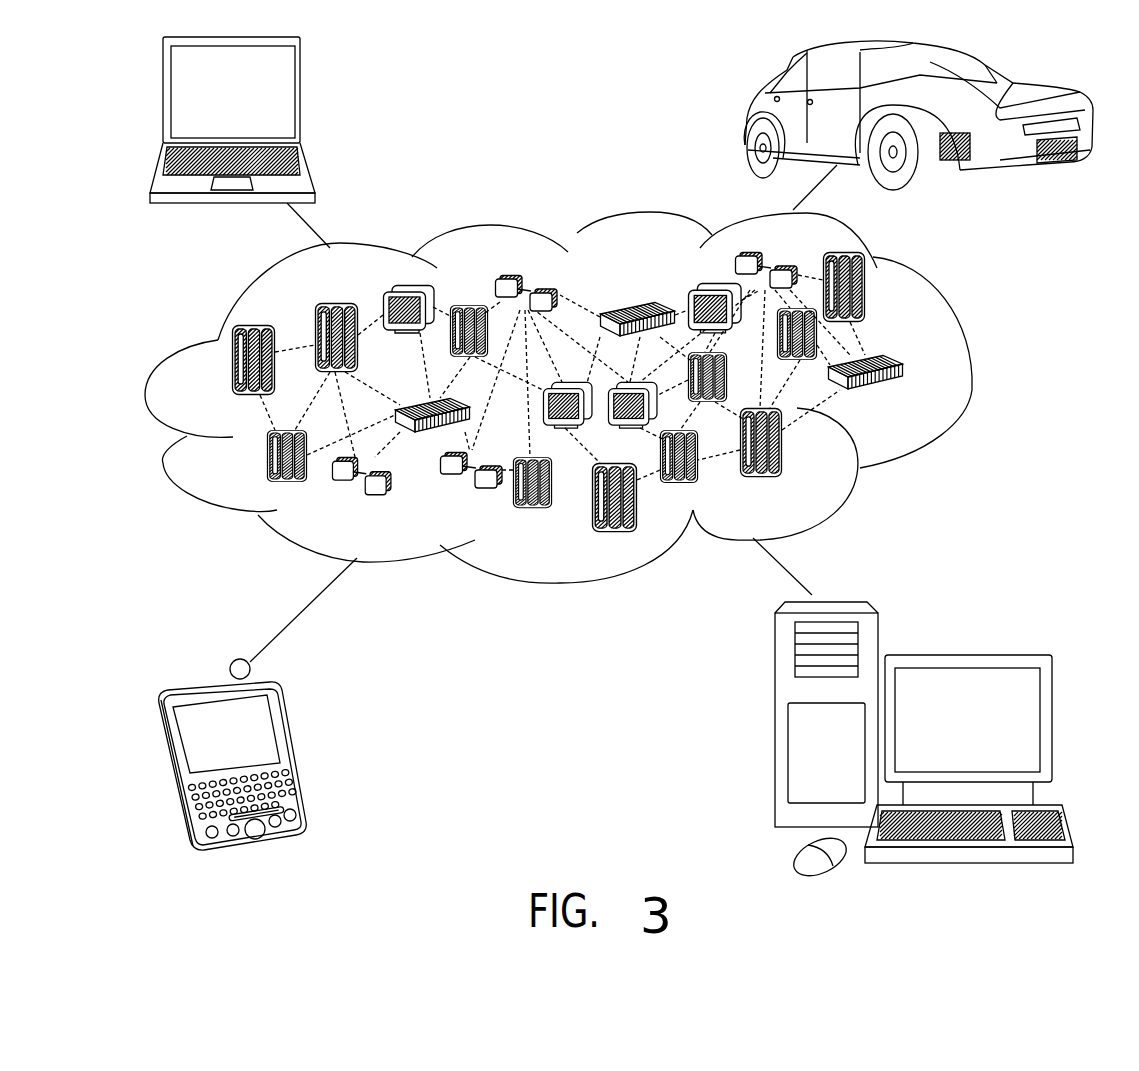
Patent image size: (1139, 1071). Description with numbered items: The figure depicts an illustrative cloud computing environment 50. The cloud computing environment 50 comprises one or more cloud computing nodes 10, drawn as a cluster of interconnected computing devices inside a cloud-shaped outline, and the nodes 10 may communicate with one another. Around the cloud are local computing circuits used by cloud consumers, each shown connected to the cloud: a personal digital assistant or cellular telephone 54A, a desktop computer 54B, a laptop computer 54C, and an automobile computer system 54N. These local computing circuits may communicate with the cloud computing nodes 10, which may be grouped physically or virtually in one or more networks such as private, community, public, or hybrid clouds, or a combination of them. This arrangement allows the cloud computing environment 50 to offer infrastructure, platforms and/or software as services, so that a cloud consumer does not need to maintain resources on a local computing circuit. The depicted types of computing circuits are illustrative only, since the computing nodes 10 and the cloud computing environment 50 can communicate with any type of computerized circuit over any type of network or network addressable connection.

The cloud computing node 10 is at (906, 398).
The cloud computing environment 50 is at (968, 372).
The personal digital assistant (PDA) or cellular telephone 54A is at (292, 750).
The desktop computer 54B is at (963, 650).
The laptop computer 54C is at (303, 102).
The automobile computer system 54N is at (745, 118).